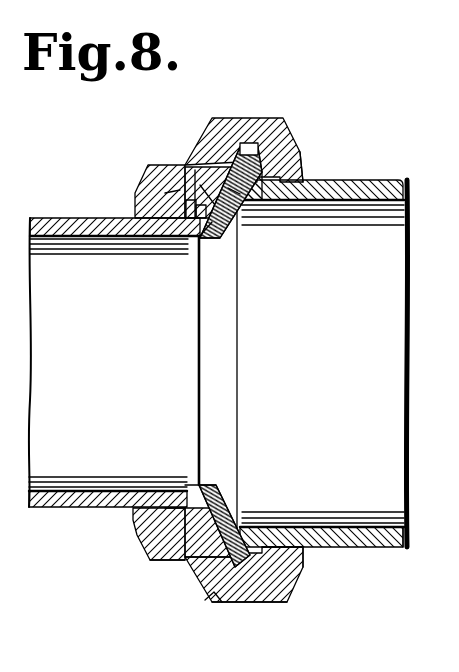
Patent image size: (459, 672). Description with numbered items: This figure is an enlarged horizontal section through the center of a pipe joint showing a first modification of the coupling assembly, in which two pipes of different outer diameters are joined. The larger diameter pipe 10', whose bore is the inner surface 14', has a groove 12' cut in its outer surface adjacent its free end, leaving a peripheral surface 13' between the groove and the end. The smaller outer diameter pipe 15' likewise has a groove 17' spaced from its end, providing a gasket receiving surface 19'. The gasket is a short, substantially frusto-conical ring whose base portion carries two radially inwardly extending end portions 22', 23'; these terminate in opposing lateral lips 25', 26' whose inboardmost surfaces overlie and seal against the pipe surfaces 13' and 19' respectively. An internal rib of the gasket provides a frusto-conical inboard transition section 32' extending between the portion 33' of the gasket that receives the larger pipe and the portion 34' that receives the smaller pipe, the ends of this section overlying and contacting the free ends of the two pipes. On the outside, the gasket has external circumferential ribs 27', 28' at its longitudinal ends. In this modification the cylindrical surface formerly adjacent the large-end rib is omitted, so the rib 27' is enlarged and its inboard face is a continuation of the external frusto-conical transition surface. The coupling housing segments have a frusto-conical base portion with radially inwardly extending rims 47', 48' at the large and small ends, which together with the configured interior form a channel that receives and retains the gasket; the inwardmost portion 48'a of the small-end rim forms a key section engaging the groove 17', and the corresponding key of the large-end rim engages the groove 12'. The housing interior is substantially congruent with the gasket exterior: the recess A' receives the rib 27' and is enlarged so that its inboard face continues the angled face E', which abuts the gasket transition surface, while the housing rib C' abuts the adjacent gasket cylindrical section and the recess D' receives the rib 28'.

The smaller outer diameter pipe 15' is at (114, 340).
The larger diameter pipe 10' is at (327, 346).
The inner surface or bore of larger pipe 14' is at (427, 532).
The frusto-conical inboard transition section 32' is at (243, 357).
The end portion of gasket 22' is at (264, 360).
The rim of coupling housing 47' is at (328, 162).
The lip 25' is at (330, 561).
The external circumferential rib 27' is at (249, 619).
The portion of gasket receiving larger pipe 33' is at (202, 612).
The rim of coupling housing 48' is at (139, 190).
The inwardmost extending portion of rim 48'a is at (135, 534).
The end portion of gasket 23' is at (153, 369).
The groove in smaller pipe 17' is at (158, 254).
The gasket receiving surface 19' is at (187, 255).
The gasket engaging surface of larger pipe 13' is at (268, 213).
The recess A' is at (245, 123).
The rib of coupling housing C' is at (217, 270).
The groove or recess D' is at (148, 162).
The angled face E' is at (203, 157).
The portion of gasket receiving smaller pipe 34' is at (145, 477).
The lip 26' is at (177, 461).
The external circumferential rib 28' is at (165, 579).
The groove in larger pipe 12' is at (301, 530).